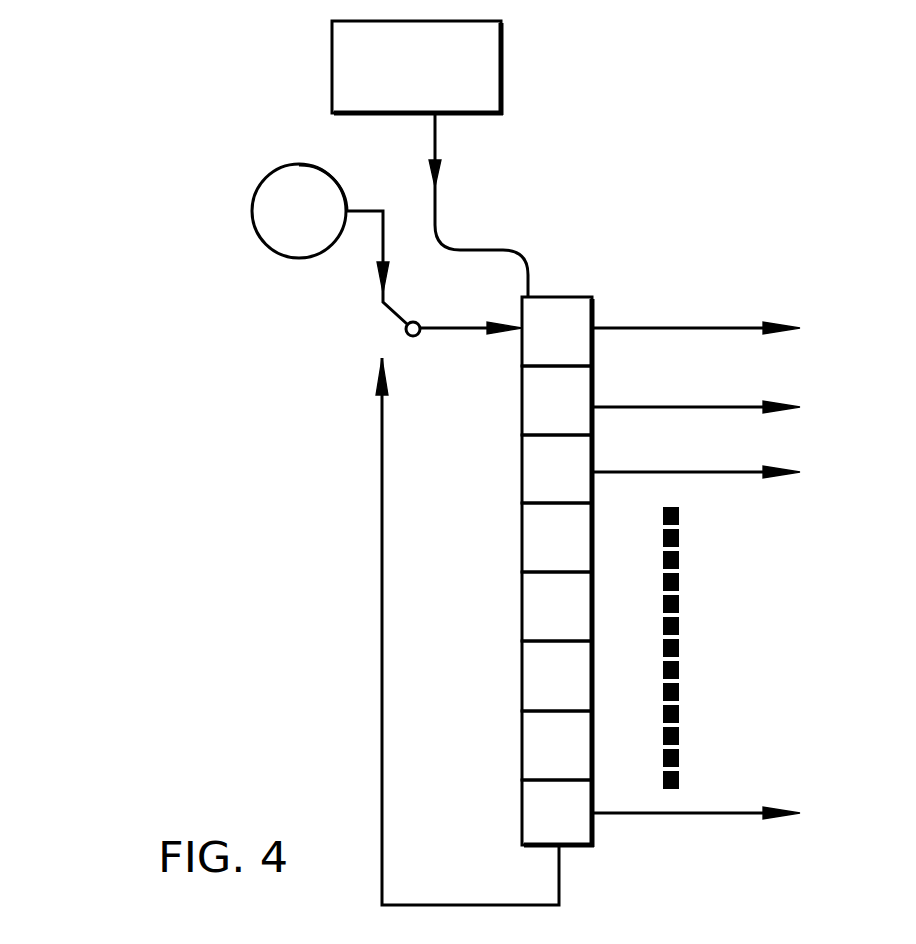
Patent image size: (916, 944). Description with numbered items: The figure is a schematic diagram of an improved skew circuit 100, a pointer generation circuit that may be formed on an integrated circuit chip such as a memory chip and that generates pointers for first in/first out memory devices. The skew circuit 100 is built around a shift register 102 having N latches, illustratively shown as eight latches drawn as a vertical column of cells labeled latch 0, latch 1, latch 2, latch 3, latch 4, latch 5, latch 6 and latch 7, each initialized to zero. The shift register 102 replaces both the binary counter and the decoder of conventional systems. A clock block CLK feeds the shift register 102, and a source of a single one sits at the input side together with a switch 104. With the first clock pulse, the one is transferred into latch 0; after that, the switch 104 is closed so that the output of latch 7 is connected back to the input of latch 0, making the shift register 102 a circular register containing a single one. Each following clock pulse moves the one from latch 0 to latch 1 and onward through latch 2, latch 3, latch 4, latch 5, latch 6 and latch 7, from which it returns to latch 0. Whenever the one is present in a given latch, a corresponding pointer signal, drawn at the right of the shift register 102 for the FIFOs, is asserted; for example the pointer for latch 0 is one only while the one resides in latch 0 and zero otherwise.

The skew circuit 100 is at (150, 253).
The shift register 102 is at (560, 297).
The switch 104 is at (356, 331).
The latch 0 is at (522, 352).
The latch 1 is at (522, 421).
The latch 2 is at (522, 489).
The latch 3 is at (522, 558).
The latch 4 is at (522, 627).
The latch 5 is at (522, 697).
The latch 6 is at (522, 766).
The latch 7 is at (522, 832).